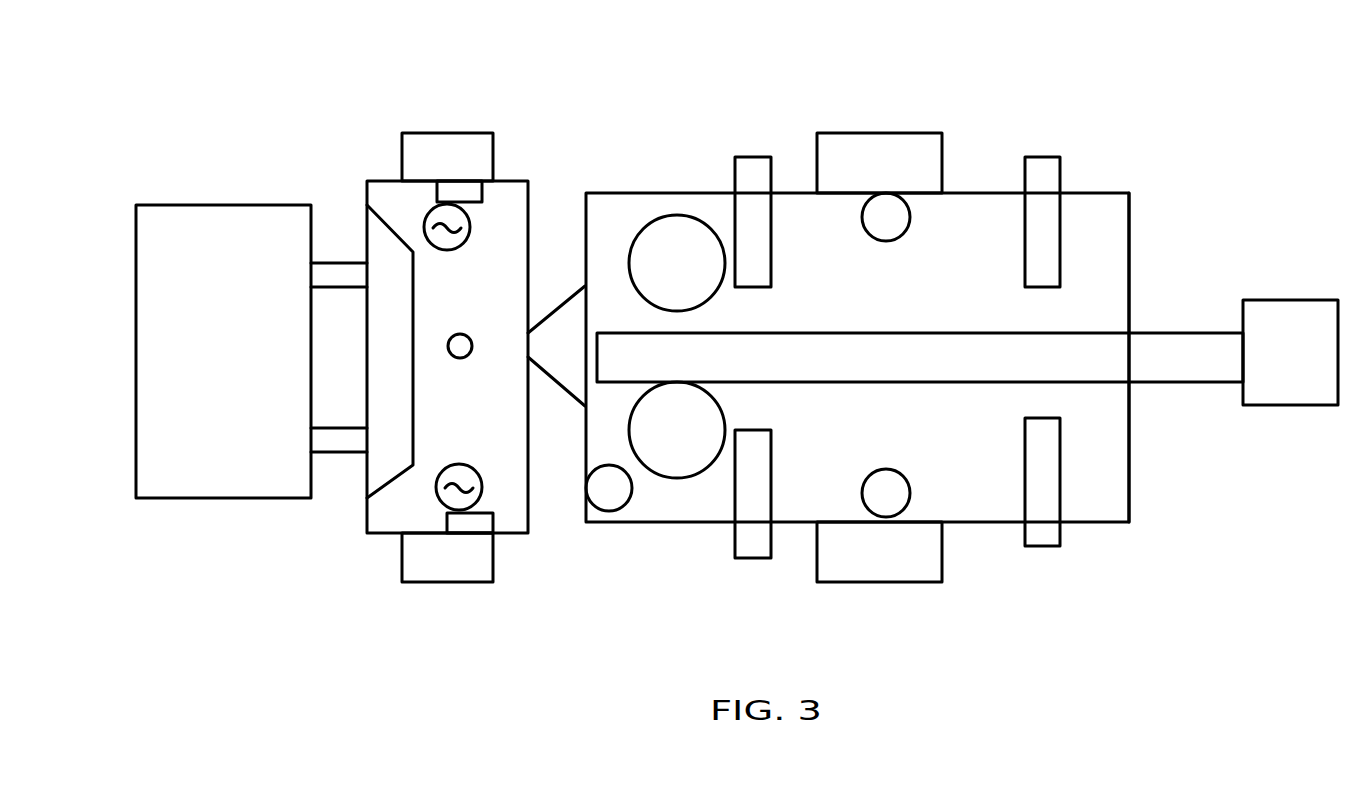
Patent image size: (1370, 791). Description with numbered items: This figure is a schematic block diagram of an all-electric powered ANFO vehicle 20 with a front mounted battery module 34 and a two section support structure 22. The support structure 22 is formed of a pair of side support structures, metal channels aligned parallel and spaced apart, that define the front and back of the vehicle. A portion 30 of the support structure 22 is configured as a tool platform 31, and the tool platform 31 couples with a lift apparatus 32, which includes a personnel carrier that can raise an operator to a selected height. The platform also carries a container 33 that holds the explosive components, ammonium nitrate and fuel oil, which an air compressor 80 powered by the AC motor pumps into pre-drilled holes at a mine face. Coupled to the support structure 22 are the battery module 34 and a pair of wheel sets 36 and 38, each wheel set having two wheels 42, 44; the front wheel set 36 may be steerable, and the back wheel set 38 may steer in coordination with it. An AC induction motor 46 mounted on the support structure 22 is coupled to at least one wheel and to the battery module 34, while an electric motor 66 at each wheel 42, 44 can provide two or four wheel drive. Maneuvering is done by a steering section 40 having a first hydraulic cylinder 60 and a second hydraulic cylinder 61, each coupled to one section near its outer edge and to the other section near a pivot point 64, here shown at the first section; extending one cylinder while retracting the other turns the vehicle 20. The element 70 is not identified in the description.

The all-electric powered ANFO vehicle 20 is at (1108, 72).
The support structure 22 is at (512, 523).
The portion 30 is at (739, 325).
The tool platform 31 is at (1120, 220).
The lift apparatus 32 is at (1180, 333).
The container 33 is at (673, 395).
The battery module 34 is at (183, 220).
The wheel set 36 is at (485, 600).
The wheel set 38 is at (848, 598).
The steering section 40 is at (560, 333).
The wheel 42 is at (446, 133).
The wheel 44 is at (882, 133).
The AC induction motor 46 is at (351, 298).
The first hydraulic cylinder 60 is at (568, 392).
The second hydraulic cylinder 61 is at (558, 300).
The pivot point 64 is at (538, 378).
The electric motor 66 is at (460, 217).
The body 70 is at (383, 181).
The air compressor 80 is at (614, 492).